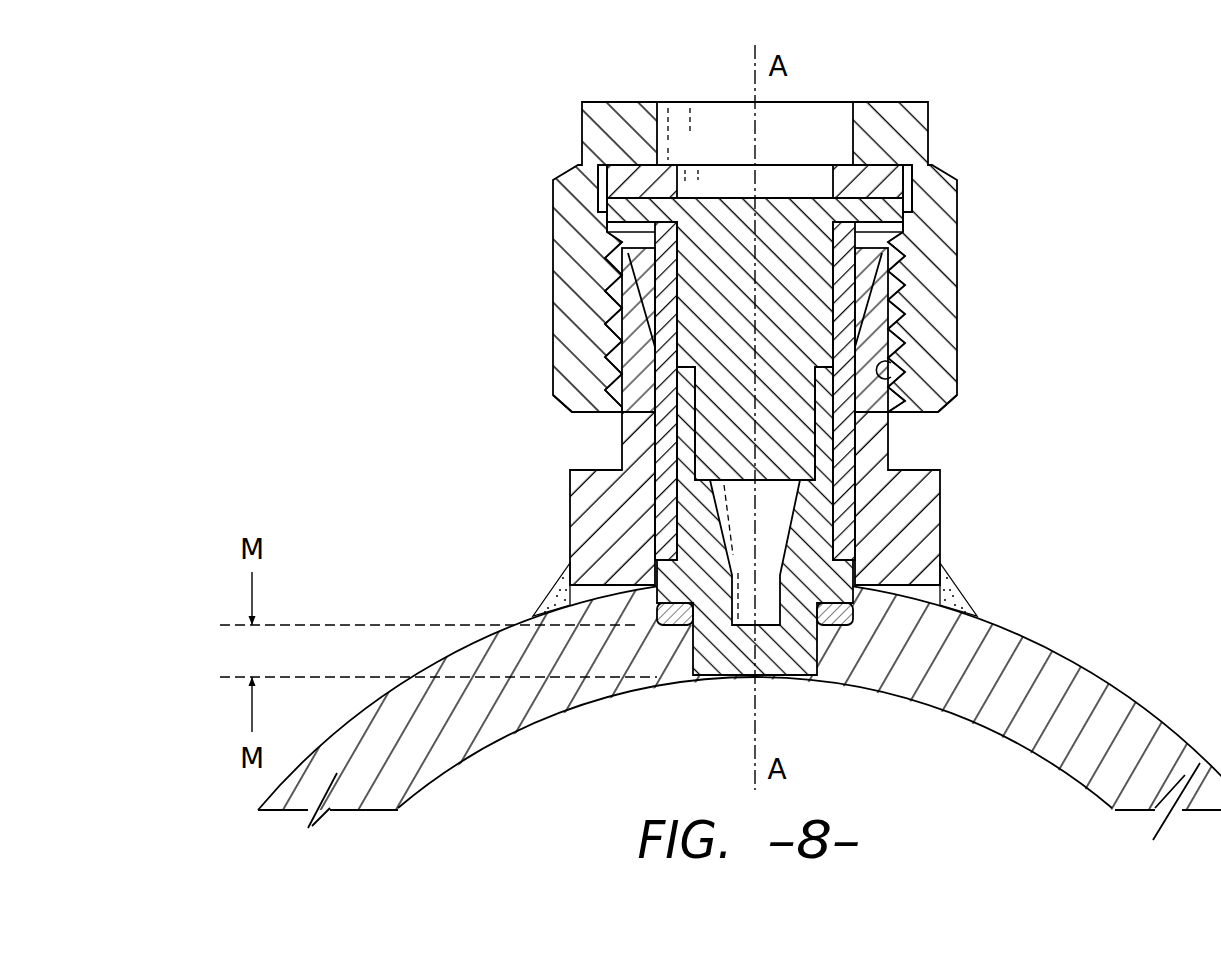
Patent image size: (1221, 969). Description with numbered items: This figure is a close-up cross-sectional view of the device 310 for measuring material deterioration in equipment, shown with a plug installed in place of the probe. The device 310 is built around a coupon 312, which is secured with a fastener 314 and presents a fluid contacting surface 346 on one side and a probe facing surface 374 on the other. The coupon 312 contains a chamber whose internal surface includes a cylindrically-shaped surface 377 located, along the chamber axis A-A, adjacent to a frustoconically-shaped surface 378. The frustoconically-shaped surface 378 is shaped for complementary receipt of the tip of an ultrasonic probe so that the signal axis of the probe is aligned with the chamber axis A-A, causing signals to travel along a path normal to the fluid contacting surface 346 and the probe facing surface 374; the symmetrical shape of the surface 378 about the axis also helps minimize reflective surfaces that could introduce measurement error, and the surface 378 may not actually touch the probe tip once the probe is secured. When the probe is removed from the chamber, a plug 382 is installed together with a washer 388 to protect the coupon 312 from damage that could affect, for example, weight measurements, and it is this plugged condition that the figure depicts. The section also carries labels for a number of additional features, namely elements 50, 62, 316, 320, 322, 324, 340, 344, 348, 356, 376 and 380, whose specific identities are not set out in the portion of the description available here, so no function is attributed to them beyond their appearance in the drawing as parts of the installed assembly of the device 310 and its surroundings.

The pipe wall 50 is at (1127, 738).
The outlet orifice 62 is at (788, 693).
The device for measuring material deterioration 310 is at (464, 200).
The coupon 312 is at (838, 576).
The fastener 314 is at (1028, 383).
The body 316 is at (942, 492).
The nut 320 is at (917, 127).
The threads 322 is at (906, 331).
The opening 324 is at (810, 108).
The seal seat 340 is at (670, 590).
The O-ring seal 344 is at (837, 613).
The fluid contacting surface 346 is at (725, 682).
The weld 348 is at (960, 588).
The collet 356 is at (665, 356).
The probe facing surface 374 is at (836, 518).
The retaining ring 376 is at (886, 378).
The cylindrically-shaped surface 377 is at (818, 440).
The frustoconically-shaped surface 378 is at (713, 517).
The sleeve 380 is at (703, 465).
The plug 382 is at (817, 255).
The washer 388 is at (912, 185).